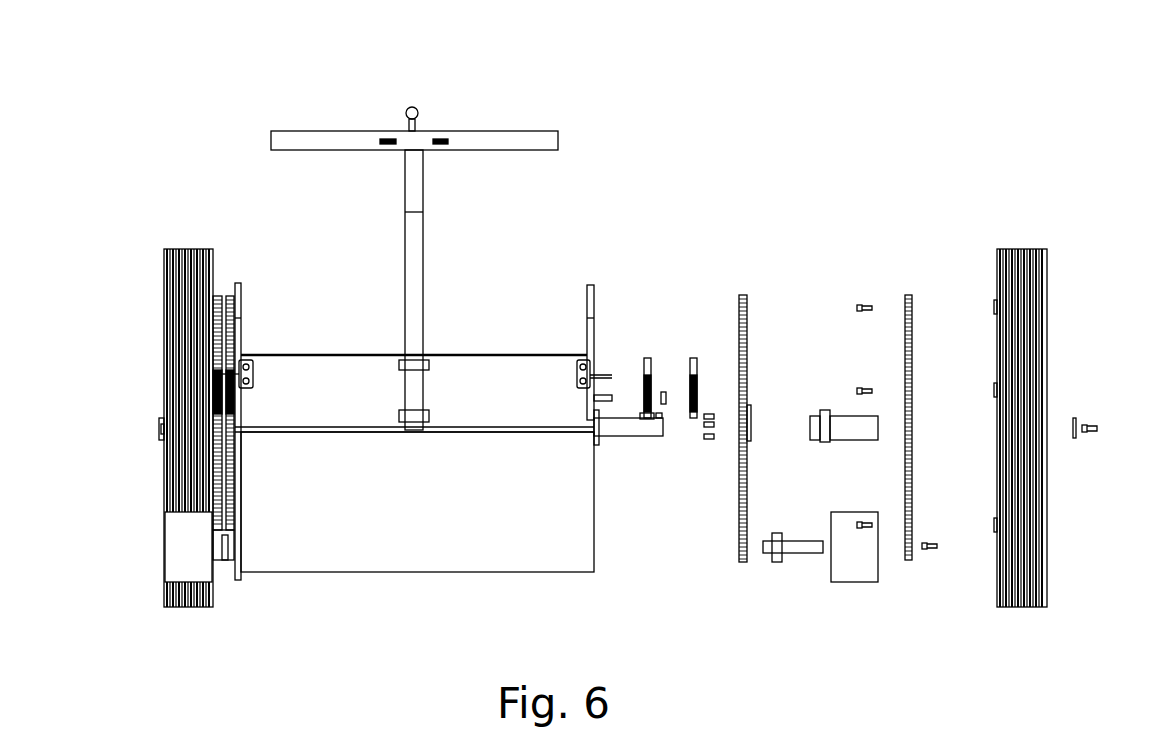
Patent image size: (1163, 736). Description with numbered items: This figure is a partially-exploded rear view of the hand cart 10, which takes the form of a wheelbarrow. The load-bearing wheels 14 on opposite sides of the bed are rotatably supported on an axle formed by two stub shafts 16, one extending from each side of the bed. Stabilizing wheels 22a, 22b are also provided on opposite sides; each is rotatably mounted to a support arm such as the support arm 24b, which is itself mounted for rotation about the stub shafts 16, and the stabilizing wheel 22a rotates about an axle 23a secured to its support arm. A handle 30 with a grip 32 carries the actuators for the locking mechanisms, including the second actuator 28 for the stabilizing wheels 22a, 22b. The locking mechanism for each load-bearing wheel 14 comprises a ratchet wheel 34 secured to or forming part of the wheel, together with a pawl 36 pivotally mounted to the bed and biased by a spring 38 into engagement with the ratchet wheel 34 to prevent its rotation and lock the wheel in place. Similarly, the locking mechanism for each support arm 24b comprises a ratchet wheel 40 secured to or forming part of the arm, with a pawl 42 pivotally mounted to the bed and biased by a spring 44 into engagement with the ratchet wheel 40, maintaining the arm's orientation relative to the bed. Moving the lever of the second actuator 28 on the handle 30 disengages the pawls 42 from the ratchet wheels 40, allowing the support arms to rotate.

The hand cart 10 is at (434, 590).
The load-bearing wheels 14 is at (184, 272).
The stub shafts 16 is at (628, 432).
The stabilizing wheel 22a is at (855, 573).
The stabilizing wheel 22b is at (185, 568).
The axle 23a is at (802, 550).
The support arm 24b is at (220, 552).
The second actuator 28 is at (420, 118).
The handle 30 is at (418, 296).
The grip 32 is at (306, 145).
The ratchet wheel 34 is at (217, 293).
The pawl 36 is at (694, 354).
The spring 38 is at (702, 392).
The ratchet wheel 40 is at (229, 293).
The pawl 42 is at (650, 354).
The spring 44 is at (644, 377).